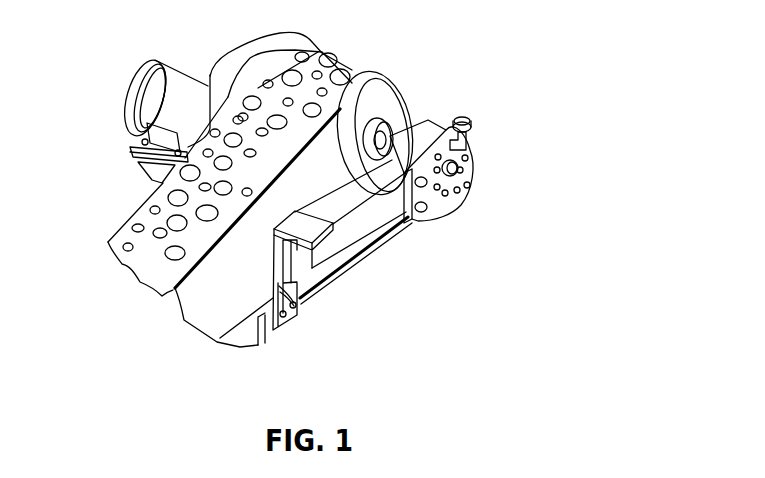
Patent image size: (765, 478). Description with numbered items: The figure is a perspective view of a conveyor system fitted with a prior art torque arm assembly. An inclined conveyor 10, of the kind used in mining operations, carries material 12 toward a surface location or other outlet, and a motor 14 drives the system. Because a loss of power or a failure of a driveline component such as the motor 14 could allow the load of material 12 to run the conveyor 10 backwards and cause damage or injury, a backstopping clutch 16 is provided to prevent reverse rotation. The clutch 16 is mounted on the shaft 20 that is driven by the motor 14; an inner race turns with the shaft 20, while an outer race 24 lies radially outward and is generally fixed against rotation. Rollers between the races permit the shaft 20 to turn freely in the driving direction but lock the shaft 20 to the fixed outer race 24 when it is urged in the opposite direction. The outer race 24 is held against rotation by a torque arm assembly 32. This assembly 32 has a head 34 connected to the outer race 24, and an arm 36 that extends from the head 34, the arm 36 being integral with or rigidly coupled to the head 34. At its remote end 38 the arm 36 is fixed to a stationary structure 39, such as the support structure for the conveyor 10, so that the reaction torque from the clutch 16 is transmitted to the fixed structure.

The inclined conveyor 10 is at (131, 198).
The material 12 is at (328, 55).
The motor 14 is at (178, 84).
The backstopping clutch 16 is at (440, 119).
The shaft 20 is at (457, 168).
The outer race 24 is at (418, 135).
The torque arm assembly 32 is at (373, 281).
The head 34 is at (442, 200).
The arm 36 is at (370, 257).
The remote end 38 is at (327, 270).
The stationary structure 39 is at (296, 313).